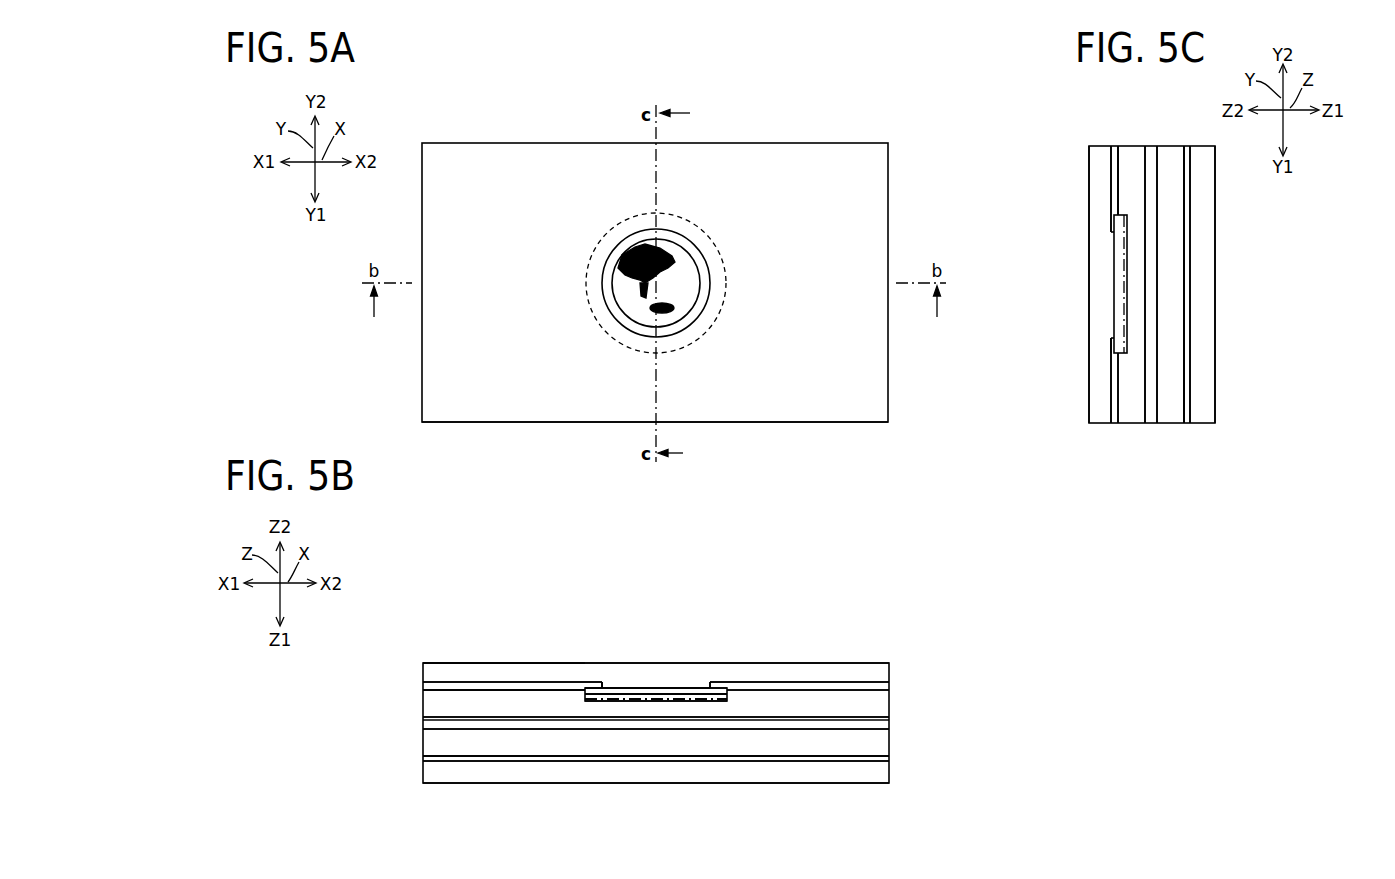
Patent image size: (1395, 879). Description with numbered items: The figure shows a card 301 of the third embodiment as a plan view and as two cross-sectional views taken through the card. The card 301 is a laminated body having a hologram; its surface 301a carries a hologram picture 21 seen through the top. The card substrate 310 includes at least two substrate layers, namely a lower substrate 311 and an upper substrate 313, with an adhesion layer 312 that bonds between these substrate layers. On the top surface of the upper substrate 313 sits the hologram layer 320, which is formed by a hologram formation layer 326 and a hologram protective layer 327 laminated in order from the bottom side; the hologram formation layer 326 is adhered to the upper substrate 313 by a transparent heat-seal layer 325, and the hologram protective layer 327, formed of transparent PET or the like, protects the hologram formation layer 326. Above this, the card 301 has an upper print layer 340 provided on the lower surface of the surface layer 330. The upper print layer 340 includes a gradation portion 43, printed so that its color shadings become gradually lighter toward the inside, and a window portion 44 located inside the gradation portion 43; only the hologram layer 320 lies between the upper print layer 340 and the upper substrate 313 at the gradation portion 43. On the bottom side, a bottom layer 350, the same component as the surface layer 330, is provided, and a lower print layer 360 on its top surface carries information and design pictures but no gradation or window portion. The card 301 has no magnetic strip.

In FIG. 5A, the card 301 is at (487, 113).
In FIG. 5A, the card surface 301a is at (450, 388).
In FIG. 5B, the card surface 301a is at (465, 662).
In FIG. 5A, the hologram picture 21 is at (682, 262).
In FIG. 5B, the window portion 44 is at (612, 654).
In FIG. 5C, the window portion 44 is at (1092, 275).
In FIG. 5B, the gradation portion 43 is at (584, 667).
In FIG. 5C, the gradation portion 43 is at (1094, 355).
In FIG. 5B, the hologram layer 320 is at (663, 666).
In FIG. 5C, the hologram layer 320 is at (1103, 247).
In FIG. 5B, the hologram protective layer 327 is at (680, 692).
In FIG. 5B, the hologram formation layer 326 is at (688, 698).
In FIG. 5B, the heat-seal layer 325 is at (710, 700).
In FIG. 5B, the surface layer 330 is at (880, 673).
In FIG. 5C, the surface layer 330 is at (1090, 398).
In FIG. 5B, the upper print layer 340 is at (880, 688).
In FIG. 5C, the upper print layer 340 is at (1112, 414).
In FIG. 5B, the upper substrate 313 is at (882, 705).
In FIG. 5C, the upper substrate 313 is at (1133, 420).
In FIG. 5B, the adhesion layer 312 is at (882, 722).
In FIG. 5C, the adhesion layer 312 is at (1150, 420).
In FIG. 5B, the lower substrate 311 is at (882, 745).
In FIG. 5C, the lower substrate 311 is at (1170, 420).
In FIG. 5B, the lower print layer 360 is at (883, 765).
In FIG. 5C, the lower print layer 360 is at (1190, 420).
In FIG. 5B, the bottom layer 350 is at (878, 778).
In FIG. 5C, the bottom layer 350 is at (1207, 413).
In FIG. 5B, the card substrate 310 is at (418, 756).
In FIG. 5C, the card substrate 310 is at (1213, 483).